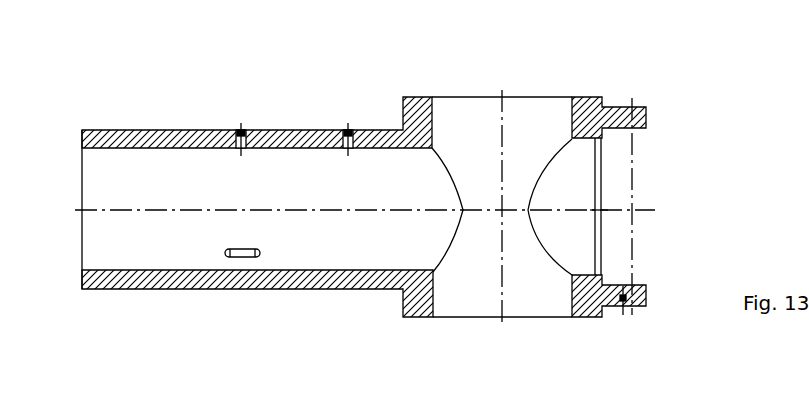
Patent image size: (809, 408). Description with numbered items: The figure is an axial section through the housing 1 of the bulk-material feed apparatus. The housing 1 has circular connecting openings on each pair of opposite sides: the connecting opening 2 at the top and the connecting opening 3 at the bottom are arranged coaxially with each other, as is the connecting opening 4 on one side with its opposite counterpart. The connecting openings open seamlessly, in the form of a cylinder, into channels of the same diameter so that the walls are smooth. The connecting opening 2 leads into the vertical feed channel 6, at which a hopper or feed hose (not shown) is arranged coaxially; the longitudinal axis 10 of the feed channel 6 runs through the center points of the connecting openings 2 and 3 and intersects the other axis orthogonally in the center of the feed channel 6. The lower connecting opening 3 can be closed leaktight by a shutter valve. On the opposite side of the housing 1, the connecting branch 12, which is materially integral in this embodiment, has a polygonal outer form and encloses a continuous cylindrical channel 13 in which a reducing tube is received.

The housing 1 is at (593, 97).
The connecting opening 2 is at (442, 84).
The connecting opening 3 is at (615, 167).
The connecting opening 4 is at (427, 166).
The feed channel 6 is at (488, 148).
The longitudinal axis 10 is at (523, 312).
The connecting branch 12 is at (137, 132).
The cylindrical channel 13 is at (285, 270).